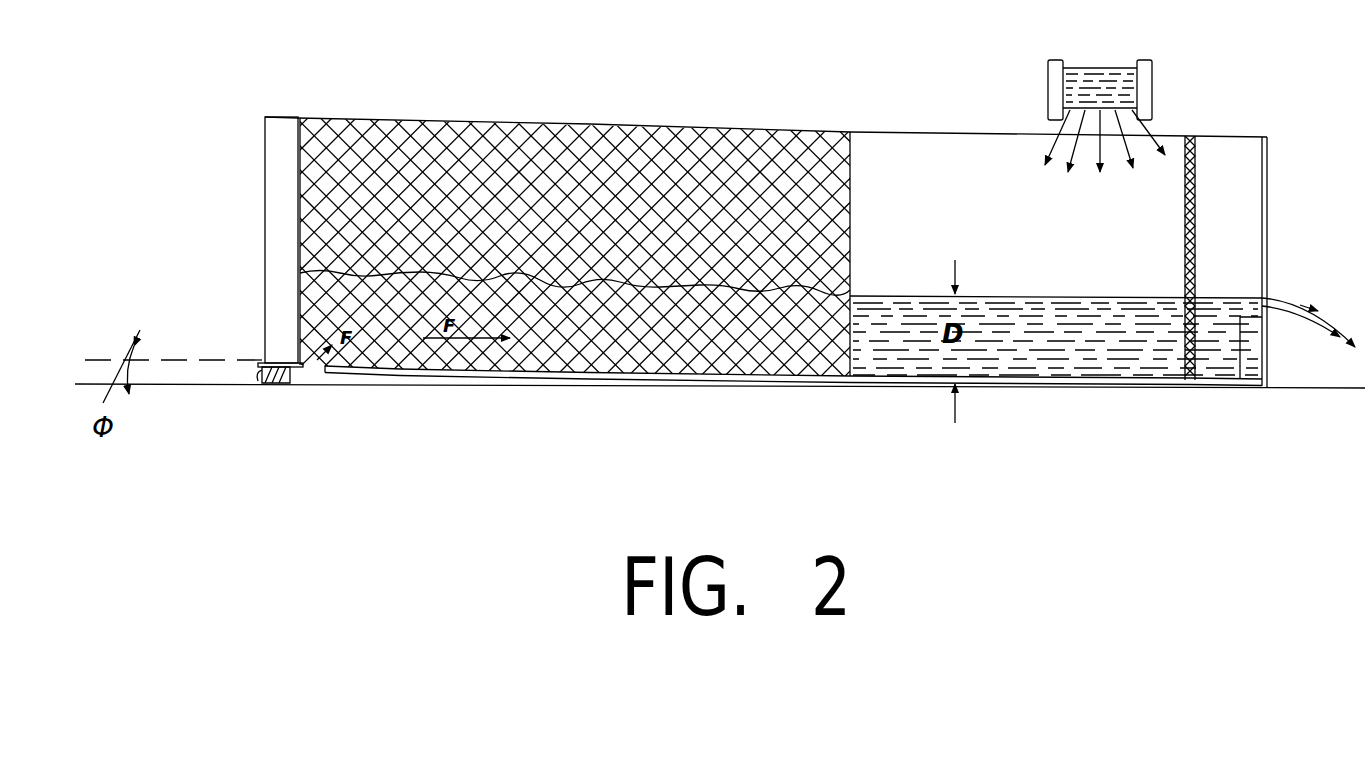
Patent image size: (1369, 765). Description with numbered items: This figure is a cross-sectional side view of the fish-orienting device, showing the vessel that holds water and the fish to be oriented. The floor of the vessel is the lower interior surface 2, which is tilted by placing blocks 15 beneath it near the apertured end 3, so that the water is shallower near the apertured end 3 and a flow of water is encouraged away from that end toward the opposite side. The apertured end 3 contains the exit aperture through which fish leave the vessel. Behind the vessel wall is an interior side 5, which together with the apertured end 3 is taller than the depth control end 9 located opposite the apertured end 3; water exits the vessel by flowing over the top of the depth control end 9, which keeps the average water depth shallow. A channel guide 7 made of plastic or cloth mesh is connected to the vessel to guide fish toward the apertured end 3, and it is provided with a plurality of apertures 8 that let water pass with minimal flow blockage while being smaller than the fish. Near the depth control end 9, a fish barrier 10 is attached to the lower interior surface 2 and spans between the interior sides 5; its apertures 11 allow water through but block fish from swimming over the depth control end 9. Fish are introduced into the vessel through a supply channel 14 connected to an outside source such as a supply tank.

The lower interior surface 2 is at (513, 372).
The apertured end 3 is at (270, 186).
The interior side 5 is at (921, 152).
The channel guide 7 is at (852, 215).
The apertures 8 is at (660, 150).
The depth control end 9 is at (1255, 357).
The fish barrier 10 is at (1193, 135).
The apertures 11 is at (1185, 210).
The supply channel 14 is at (1153, 81).
The blocks 15 is at (256, 372).